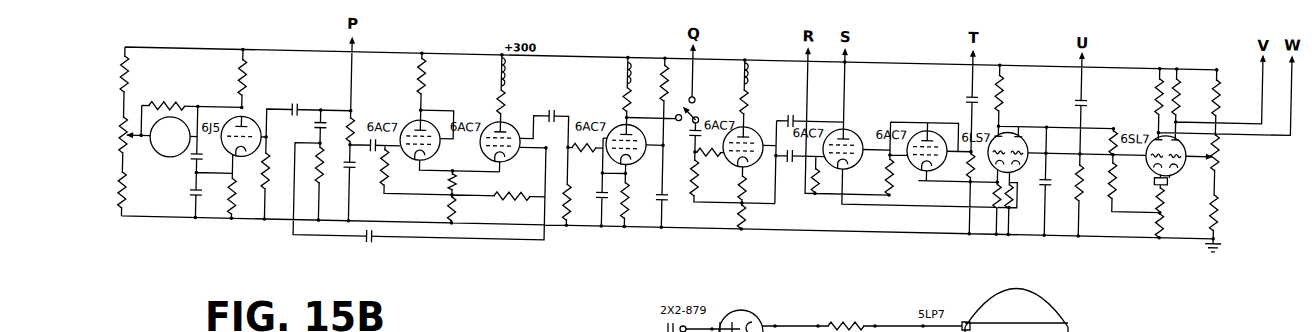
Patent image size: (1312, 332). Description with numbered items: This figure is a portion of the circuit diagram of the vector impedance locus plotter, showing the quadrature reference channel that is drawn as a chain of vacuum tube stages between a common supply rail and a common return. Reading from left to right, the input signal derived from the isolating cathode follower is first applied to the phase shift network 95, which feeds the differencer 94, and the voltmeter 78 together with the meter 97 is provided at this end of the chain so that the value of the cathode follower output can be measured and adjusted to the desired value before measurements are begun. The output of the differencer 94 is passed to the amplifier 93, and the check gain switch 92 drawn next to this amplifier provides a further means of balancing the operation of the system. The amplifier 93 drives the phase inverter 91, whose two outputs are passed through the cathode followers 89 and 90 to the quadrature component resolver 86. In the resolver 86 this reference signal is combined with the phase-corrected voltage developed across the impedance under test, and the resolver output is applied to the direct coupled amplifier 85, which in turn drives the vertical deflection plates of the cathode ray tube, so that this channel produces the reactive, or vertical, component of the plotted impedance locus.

The voltmeter 78 is at (232, 89).
The meter 97 is at (181, 154).
The phase shift network 95 is at (326, 155).
The differencer 94 is at (491, 107).
The amplifier 93 is at (619, 110).
The check gain switch 92 is at (699, 97).
The phase inverter 91 is at (744, 108).
The cathode follower 90 is at (933, 103).
The cathode follower 89 is at (848, 103).
The quadrature component resolver 86 is at (1029, 101).
The direct coupled amplifier 85 is at (1157, 111).